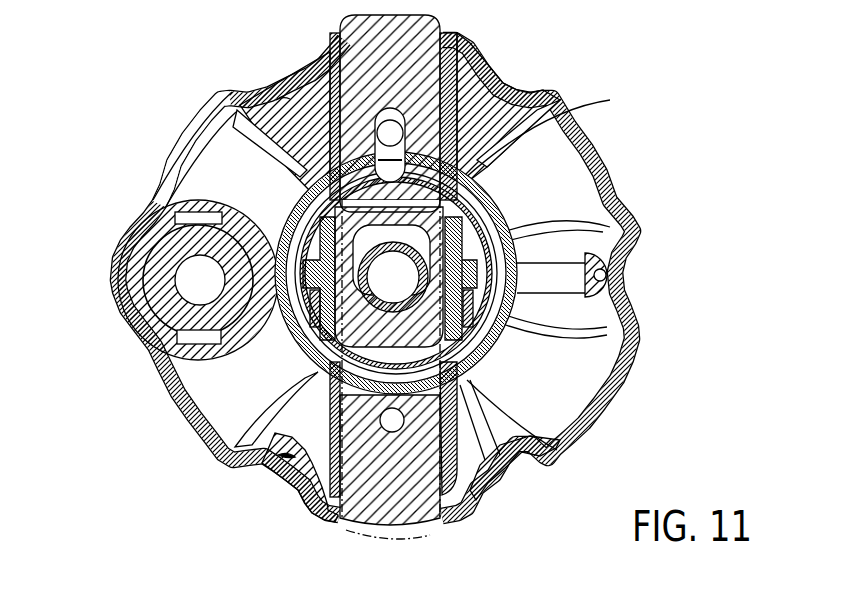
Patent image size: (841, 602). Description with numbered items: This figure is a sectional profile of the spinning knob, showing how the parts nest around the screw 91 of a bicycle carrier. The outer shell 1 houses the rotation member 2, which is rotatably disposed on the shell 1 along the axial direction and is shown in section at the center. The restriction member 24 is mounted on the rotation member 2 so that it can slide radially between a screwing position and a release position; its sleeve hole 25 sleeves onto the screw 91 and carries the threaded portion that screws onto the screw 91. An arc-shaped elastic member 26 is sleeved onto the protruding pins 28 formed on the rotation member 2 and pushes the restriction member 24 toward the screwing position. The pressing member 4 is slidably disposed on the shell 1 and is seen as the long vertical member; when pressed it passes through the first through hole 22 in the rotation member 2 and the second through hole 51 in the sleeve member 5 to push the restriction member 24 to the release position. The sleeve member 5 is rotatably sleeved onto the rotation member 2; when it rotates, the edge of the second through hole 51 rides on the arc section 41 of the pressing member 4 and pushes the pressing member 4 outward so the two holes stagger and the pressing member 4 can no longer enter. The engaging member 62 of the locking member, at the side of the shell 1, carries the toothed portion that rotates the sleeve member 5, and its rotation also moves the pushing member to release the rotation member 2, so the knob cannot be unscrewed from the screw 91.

The shell 1 is at (577, 122).
The rotation member 2 is at (298, 212).
The pressing member 4 is at (427, 77).
The sleeve member 5 is at (303, 337).
The first through hole 22 is at (505, 190).
The restriction member 24 is at (470, 263).
The sleeve hole 25 is at (415, 243).
The elastic member 26 is at (315, 293).
The protruding pin 28 is at (313, 275).
The arc section 41 is at (467, 180).
The second through hole 51 is at (255, 112).
The engaging member 62 is at (163, 257).
The screw 91 is at (417, 283).